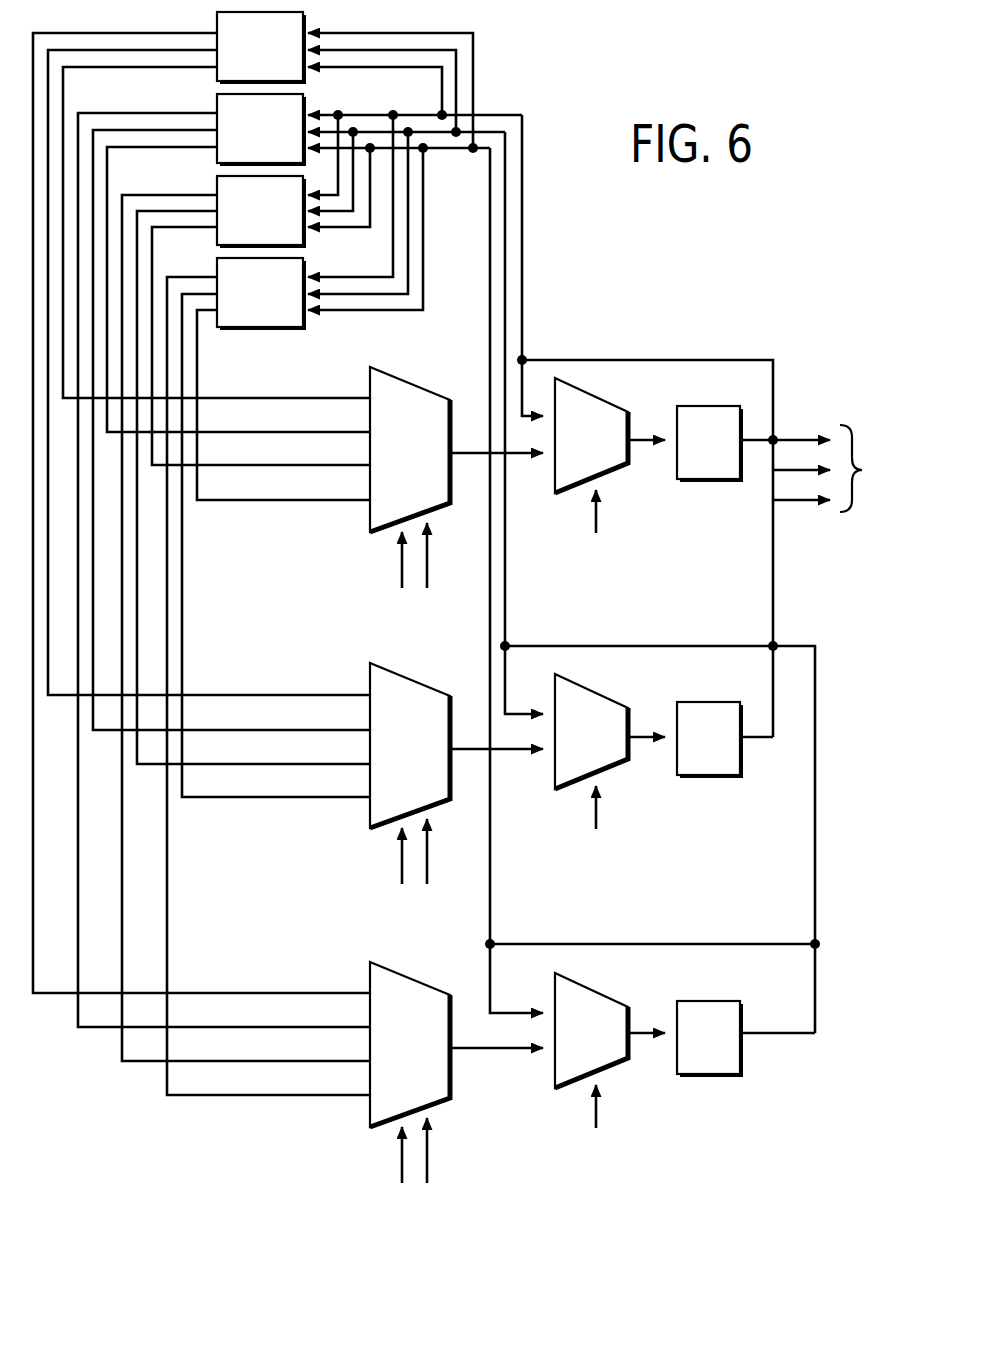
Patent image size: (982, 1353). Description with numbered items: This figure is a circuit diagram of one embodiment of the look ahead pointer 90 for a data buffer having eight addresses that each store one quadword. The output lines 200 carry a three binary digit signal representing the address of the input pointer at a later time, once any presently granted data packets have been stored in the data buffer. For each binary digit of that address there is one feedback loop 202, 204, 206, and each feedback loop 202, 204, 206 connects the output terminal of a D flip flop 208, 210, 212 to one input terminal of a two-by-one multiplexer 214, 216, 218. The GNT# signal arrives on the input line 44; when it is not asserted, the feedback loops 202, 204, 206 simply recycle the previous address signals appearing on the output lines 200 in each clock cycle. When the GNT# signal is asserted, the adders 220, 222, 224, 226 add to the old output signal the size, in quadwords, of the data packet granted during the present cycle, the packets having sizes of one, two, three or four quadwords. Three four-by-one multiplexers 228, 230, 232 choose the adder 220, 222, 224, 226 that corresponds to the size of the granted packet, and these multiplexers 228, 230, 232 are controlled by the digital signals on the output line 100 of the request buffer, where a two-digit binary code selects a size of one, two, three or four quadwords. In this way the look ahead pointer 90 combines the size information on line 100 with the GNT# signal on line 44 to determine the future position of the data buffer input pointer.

The adder 220 is at (241, 69).
The adder 222 is at (241, 151).
The adder 224 is at (241, 233).
The adder 226 is at (241, 315).
The 4×1 multiplexer 228 is at (445, 465).
The 4×1 multiplexer 230 is at (445, 761).
The 4×1 multiplexer 232 is at (445, 1060).
The 2×1 multiplexer 214 is at (623, 454).
The 2×1 multiplexer 216 is at (623, 750).
The 2×1 multiplexer 218 is at (623, 1049).
The D flip flop 208 is at (689, 468).
The D flip flop 210 is at (689, 764).
The D flip flop 212 is at (689, 1063).
The feedback loop 202 is at (679, 360).
The feedback loop 204 is at (679, 646).
The feedback loop 206 is at (679, 944).
The output lines 200 is at (842, 468).
The input line 44 is at (599, 522).
The output line 100 is at (400, 562).
The look ahead pointer 90 is at (86, 1091).